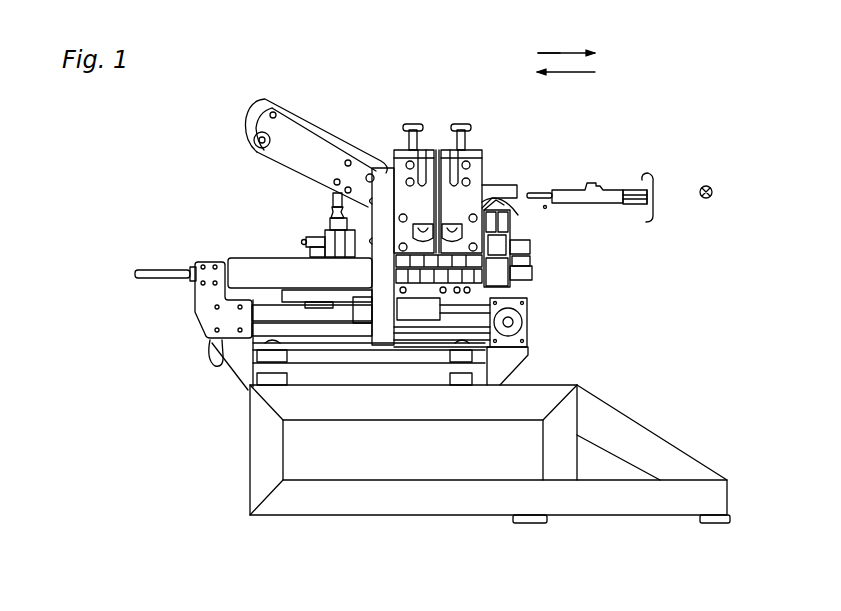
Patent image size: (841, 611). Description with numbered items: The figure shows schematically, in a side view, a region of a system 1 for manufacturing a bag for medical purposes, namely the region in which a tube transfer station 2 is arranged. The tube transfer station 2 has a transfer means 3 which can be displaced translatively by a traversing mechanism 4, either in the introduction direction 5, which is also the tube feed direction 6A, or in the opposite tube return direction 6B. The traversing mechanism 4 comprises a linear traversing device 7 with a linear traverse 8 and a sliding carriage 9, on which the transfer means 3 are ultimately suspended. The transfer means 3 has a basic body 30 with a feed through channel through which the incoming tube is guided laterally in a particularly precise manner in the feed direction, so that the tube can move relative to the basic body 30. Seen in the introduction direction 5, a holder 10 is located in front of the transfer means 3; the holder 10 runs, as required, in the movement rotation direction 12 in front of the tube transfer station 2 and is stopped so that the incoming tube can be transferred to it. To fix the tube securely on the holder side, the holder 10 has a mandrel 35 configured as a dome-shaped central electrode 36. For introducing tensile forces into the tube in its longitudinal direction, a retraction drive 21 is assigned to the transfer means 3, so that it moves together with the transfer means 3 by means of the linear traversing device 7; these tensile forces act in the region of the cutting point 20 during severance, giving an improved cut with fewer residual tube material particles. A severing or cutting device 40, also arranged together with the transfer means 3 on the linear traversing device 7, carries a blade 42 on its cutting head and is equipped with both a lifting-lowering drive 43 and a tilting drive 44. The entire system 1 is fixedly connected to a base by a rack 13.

The system 1 is at (662, 56).
The tube transfer station 2 is at (447, 78).
The transfer means 3 is at (505, 150).
The traversing mechanism 4 is at (197, 233).
The introduction direction 5 is at (572, 50).
The tube feed direction 6A is at (560, 47).
The tube return direction 6B is at (581, 72).
The linear traversing device 7 is at (177, 333).
The linear traverse 8 is at (262, 327).
The sliding carriage 9 is at (378, 333).
The holder 10 is at (623, 158).
The movement rotation direction 12 is at (712, 192).
The rack 13 is at (258, 478).
The cutting point 20 is at (530, 173).
The retraction drive 21 is at (302, 127).
The basic body 30 is at (486, 188).
The mandrel 35 is at (542, 185).
The central electrode 36 is at (546, 208).
The severing or cutting device 40 is at (552, 255).
The blade 42 is at (518, 205).
The lifting-lowering drive 43 is at (532, 288).
The tilting drive 44 is at (525, 248).